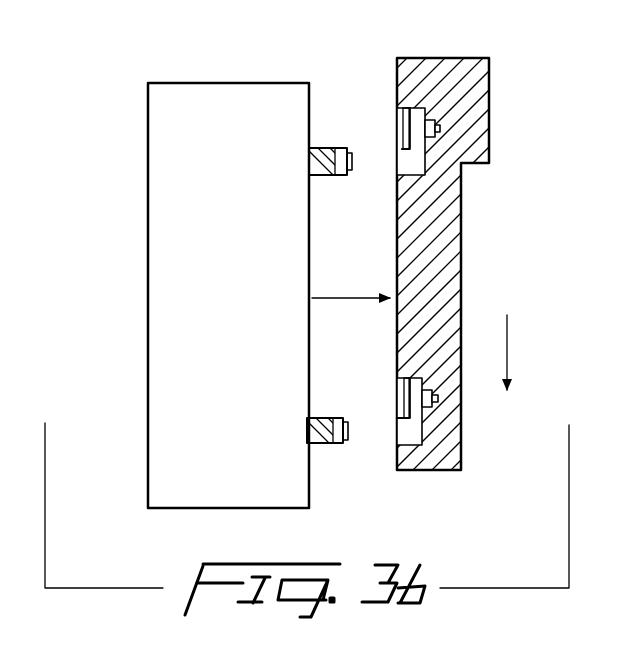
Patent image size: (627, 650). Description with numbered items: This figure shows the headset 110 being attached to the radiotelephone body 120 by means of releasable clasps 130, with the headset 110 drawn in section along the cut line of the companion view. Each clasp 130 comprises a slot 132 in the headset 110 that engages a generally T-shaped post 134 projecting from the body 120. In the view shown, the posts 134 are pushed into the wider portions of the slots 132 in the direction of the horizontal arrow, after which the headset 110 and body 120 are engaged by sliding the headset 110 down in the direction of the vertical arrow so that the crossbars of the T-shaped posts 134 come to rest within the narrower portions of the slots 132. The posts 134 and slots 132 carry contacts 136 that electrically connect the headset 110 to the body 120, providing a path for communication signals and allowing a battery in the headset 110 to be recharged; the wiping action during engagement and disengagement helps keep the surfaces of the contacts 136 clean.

The headset 110 is at (461, 248).
The radiotelephone body 120 is at (148, 438).
The releasable clasp 130 is at (333, 147).
The slot 132 is at (398, 163).
The T-shaped post 134 is at (323, 177).
The contact 136 is at (351, 152).